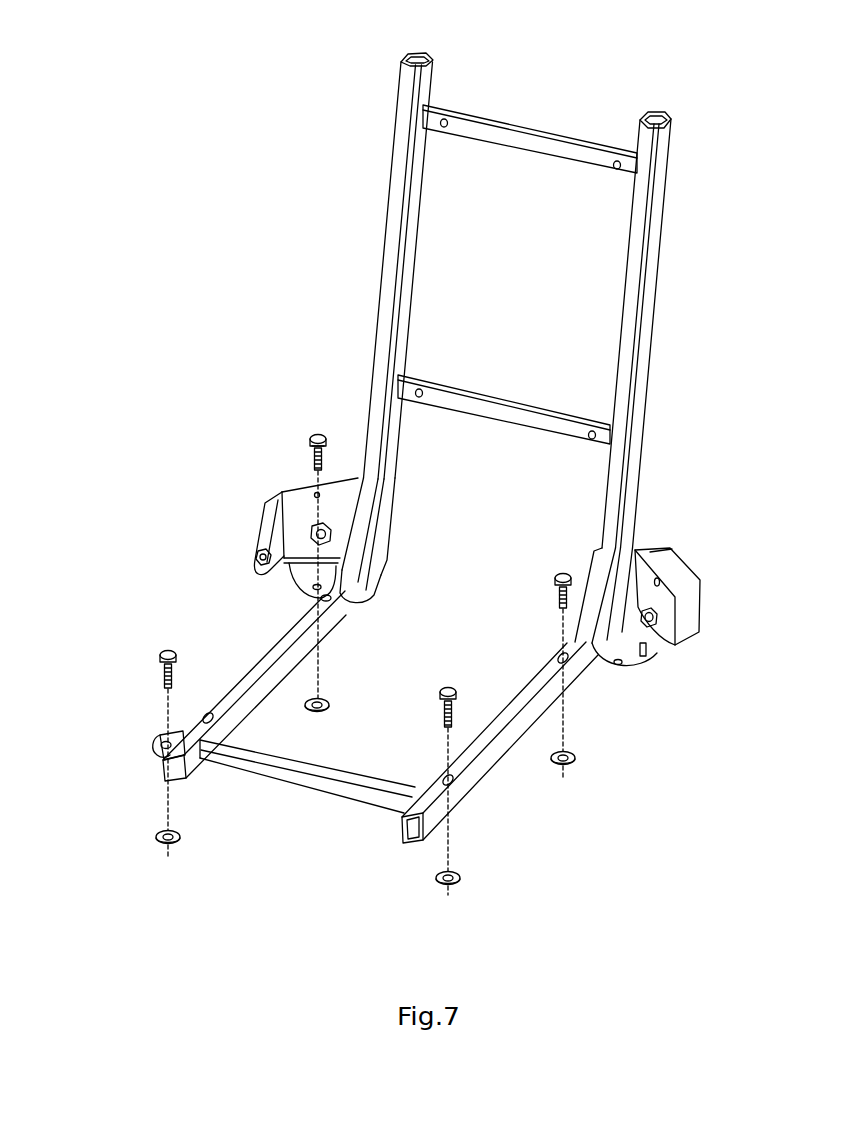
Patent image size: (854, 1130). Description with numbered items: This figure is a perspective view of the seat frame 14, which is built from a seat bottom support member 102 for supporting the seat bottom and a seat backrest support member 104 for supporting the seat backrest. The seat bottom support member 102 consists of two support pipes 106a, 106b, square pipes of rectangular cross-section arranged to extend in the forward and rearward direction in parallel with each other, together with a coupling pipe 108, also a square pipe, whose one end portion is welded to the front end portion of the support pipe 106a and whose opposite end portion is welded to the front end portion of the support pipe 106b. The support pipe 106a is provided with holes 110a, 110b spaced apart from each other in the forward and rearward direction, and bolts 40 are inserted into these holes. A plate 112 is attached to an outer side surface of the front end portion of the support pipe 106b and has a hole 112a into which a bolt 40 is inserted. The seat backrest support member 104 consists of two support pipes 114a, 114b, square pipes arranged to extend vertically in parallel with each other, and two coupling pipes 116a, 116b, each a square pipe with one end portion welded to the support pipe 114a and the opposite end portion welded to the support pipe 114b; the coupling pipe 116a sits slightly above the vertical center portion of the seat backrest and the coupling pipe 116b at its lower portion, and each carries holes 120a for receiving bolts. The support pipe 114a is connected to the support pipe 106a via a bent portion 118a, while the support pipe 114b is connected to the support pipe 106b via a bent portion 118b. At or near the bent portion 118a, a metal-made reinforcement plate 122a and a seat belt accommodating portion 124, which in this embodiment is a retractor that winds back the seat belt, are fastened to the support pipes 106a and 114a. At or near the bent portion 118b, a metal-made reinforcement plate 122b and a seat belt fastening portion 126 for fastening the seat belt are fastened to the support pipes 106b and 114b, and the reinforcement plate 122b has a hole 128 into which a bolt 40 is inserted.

The seat frame 14 is at (378, 121).
The bolts 40 is at (310, 447).
The seat bottom support member 102 is at (576, 691).
The seat backrest support member 104 is at (675, 202).
The support pipe 106a is at (500, 754).
The support pipe 106b is at (268, 663).
The coupling pipe 108 is at (290, 780).
The hole 110a is at (437, 777).
The hole 110b is at (556, 656).
The plate 112 is at (153, 753).
The hole 112a is at (157, 732).
The support pipe 114a is at (644, 343).
The support pipe 114b is at (396, 268).
The coupling pipe 116a is at (518, 127).
The coupling pipe 116b is at (492, 403).
The bent portion 118a is at (628, 627).
The bent portion 118b is at (389, 555).
The holes 120a is at (446, 121).
The reinforcement plate 122a is at (601, 558).
The reinforcement plate 122b is at (380, 525).
The seat belt accommodating portion 124 is at (678, 563).
The seat belt fastening portion 126 is at (292, 502).
The hole 128 is at (303, 570).